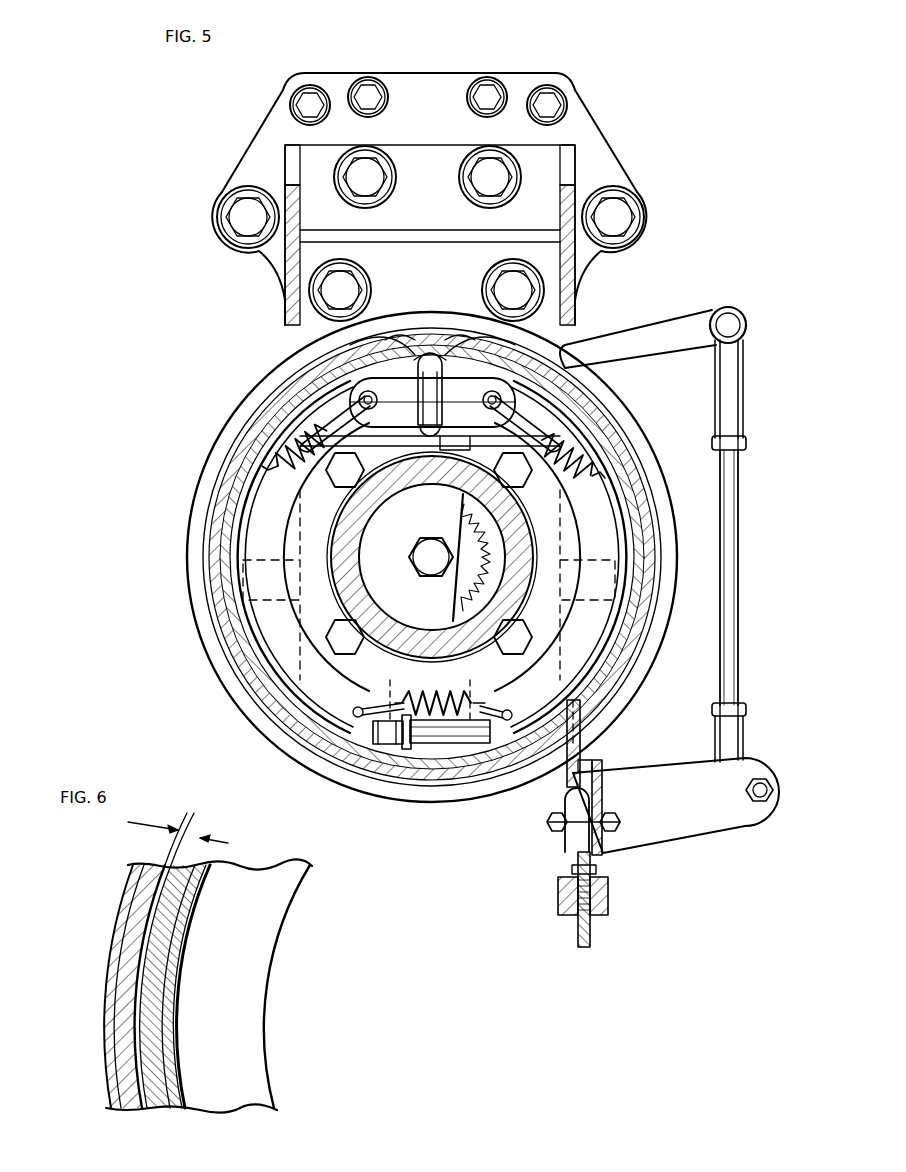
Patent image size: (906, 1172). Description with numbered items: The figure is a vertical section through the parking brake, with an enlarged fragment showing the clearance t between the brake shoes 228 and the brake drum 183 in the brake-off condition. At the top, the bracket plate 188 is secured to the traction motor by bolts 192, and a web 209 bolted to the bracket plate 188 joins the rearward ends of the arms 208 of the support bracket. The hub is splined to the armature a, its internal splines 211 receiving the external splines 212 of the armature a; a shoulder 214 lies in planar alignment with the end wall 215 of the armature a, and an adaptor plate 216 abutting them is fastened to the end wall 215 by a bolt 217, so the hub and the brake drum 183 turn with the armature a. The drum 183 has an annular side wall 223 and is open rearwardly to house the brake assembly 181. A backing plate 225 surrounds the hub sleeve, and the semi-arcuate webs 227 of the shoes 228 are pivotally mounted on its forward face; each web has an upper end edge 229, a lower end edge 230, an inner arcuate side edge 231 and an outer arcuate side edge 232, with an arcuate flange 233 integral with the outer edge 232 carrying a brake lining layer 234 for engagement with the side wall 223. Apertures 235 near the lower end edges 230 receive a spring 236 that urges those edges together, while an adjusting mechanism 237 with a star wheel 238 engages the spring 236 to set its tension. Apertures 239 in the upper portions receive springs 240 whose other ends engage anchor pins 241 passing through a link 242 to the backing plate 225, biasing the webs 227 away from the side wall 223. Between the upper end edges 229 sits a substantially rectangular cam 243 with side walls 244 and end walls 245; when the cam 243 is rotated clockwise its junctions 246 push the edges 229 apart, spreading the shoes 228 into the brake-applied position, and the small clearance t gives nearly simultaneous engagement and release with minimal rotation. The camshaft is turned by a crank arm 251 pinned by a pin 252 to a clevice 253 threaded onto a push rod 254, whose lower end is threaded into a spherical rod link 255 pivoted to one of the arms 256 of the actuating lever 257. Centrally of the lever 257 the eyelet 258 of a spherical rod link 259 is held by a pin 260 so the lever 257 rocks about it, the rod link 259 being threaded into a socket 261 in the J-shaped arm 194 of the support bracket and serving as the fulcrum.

In FIG. 5, the bracket plate 188 is at (408, 78).
In FIG. 5, the bolts 192 is at (490, 88).
In FIG. 5, the web 209 is at (415, 162).
In FIG. 5, the arm 208 is at (290, 196).
In FIG. 5, the brake drum 183 is at (226, 468).
In FIG. 6, the brake drum 183 is at (122, 916).
In FIG. 5, the brake assembly 181 is at (282, 403).
In FIG. 5, the spring 240 is at (232, 446).
In FIG. 5, the annular side wall 223 is at (246, 645).
In FIG. 6, the annular side wall 223 is at (135, 1001).
In FIG. 5, the brake shoe 228 is at (226, 520).
In FIG. 6, the brake shoe 228 is at (198, 883).
In FIG. 5, the arcuate flange 233 is at (220, 570).
In FIG. 6, the arcuate flange 233 is at (173, 966).
In FIG. 5, the brake lining layer 234 is at (212, 598).
In FIG. 6, the brake lining layer 234 is at (160, 932).
In FIG. 5, the outer arcuate side edge 232 is at (237, 537).
In FIG. 6, the outer arcuate side edge 232 is at (178, 1026).
In FIG. 5, the semi-arcuate web 227 is at (287, 498).
In FIG. 6, the semi-arcuate web 227 is at (270, 908).
In FIG. 5, the inner arcuate side edge 231 is at (283, 538).
In FIG. 6, the inner arcuate side edge 231 is at (270, 1003).
In FIG. 5, the backing plate 225 is at (289, 572).
In FIG. 5, the adaptor plate 216 is at (432, 557).
In FIG. 5, the bolt 217 is at (428, 570).
In FIG. 5, the internal splines 211 is at (470, 575).
In FIG. 5, the external splines 212 is at (495, 553).
In FIG. 5, the shoulder 214 is at (494, 565).
In FIG. 5, the end wall 215 is at (473, 590).
In FIG. 5, the armature a is at (467, 549).
In FIG. 5, the side wall 244 is at (385, 380).
In FIG. 5, the end wall 245 is at (426, 350).
In FIG. 5, the junction 246 is at (434, 350).
In FIG. 5, the upper end edge 229 is at (415, 345).
In FIG. 5, the anchor pin 241 is at (362, 398).
In FIG. 5, the cam 243 is at (398, 434).
In FIG. 5, the link 242 is at (466, 444).
In FIG. 5, the aperture 239 is at (292, 456).
In FIG. 5, the spring 236 is at (434, 690).
In FIG. 5, the adjusting mechanism 237 is at (454, 742).
In FIG. 5, the star wheel 238 is at (400, 745).
In FIG. 5, the aperture 235 is at (354, 712).
In FIG. 5, the lower end edge 230 is at (385, 692).
In FIG. 5, the crank arm 251 is at (636, 340).
In FIG. 5, the pin 252 is at (746, 325).
In FIG. 5, the clevice 253 is at (747, 398).
In FIG. 5, the push rod 254 is at (745, 540).
In FIG. 5, the spherical rod link 255 is at (746, 720).
In FIG. 5, the actuating lever 257 is at (676, 805).
In FIG. 5, the arm 256 is at (570, 782).
In FIG. 5, the eyelet 258 is at (576, 824).
In FIG. 5, the spherical rod link 259 is at (580, 840).
In FIG. 5, the pin 260 is at (612, 832).
In FIG. 5, the J-shaped arm 194 is at (604, 900).
In FIG. 5, the socket 261 is at (567, 898).
In FIG. 6, the clearance t is at (181, 840).